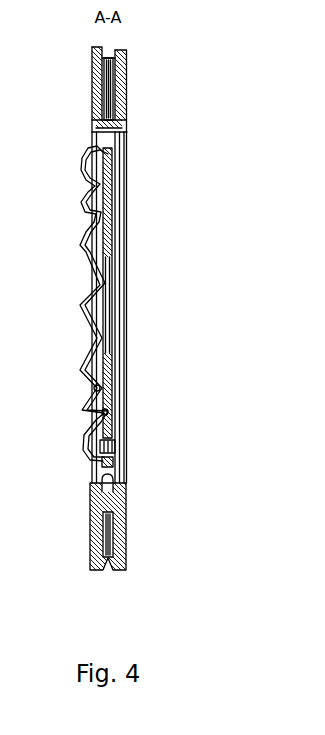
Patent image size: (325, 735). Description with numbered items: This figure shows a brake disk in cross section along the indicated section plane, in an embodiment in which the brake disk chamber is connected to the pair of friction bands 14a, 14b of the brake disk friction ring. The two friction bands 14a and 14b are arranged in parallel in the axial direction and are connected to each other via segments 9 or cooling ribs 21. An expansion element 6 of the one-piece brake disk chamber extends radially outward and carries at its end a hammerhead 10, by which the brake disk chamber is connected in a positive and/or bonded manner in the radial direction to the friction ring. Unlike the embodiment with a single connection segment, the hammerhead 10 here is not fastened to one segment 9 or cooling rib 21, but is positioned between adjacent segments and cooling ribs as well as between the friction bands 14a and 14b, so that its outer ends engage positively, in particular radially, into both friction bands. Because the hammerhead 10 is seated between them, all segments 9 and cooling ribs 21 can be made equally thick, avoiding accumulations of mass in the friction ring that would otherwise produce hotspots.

The expansion element 6 is at (102, 163).
The segment 9 is at (110, 80).
The hammerhead 10 is at (120, 117).
The friction band 14a is at (92, 92).
The friction band 14b is at (126, 60).
The cooling rib 21 is at (72, 66).